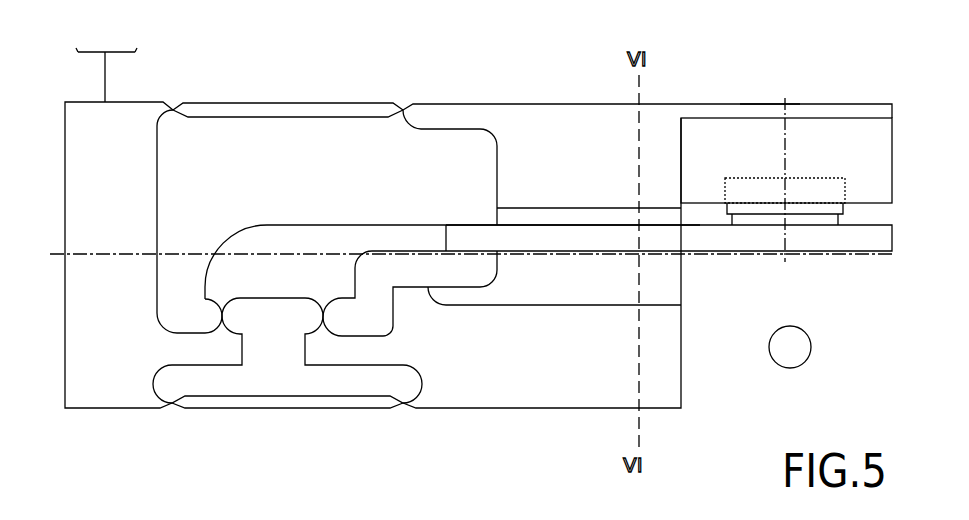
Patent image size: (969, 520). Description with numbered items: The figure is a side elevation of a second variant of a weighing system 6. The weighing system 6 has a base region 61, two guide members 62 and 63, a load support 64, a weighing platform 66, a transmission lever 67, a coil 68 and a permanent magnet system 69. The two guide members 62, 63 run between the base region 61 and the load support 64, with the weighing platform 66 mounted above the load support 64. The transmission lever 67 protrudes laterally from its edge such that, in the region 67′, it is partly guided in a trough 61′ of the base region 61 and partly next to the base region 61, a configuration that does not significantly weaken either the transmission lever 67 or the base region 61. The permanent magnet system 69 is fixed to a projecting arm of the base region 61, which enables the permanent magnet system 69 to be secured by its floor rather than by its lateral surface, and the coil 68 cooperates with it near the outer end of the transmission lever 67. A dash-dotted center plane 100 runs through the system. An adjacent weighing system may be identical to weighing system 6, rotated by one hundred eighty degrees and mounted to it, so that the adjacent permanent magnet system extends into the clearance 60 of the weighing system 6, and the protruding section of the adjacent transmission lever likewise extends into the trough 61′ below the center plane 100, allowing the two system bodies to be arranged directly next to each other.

The weighing system 6 is at (431, 50).
The clearance 60 is at (790, 347).
The base region 61 is at (567, 123).
The trough 61′ is at (523, 215).
The guide member 62 is at (280, 106).
The guide member 63 is at (295, 402).
The load support 64 is at (115, 395).
The weighing platform 66 is at (143, 52).
The transmission lever 67 is at (365, 237).
The region of the transmission lever 67′ is at (475, 230).
The coil 68 is at (838, 212).
The permanent magnet system 69 is at (870, 130).
The center plane 100 is at (48, 258).